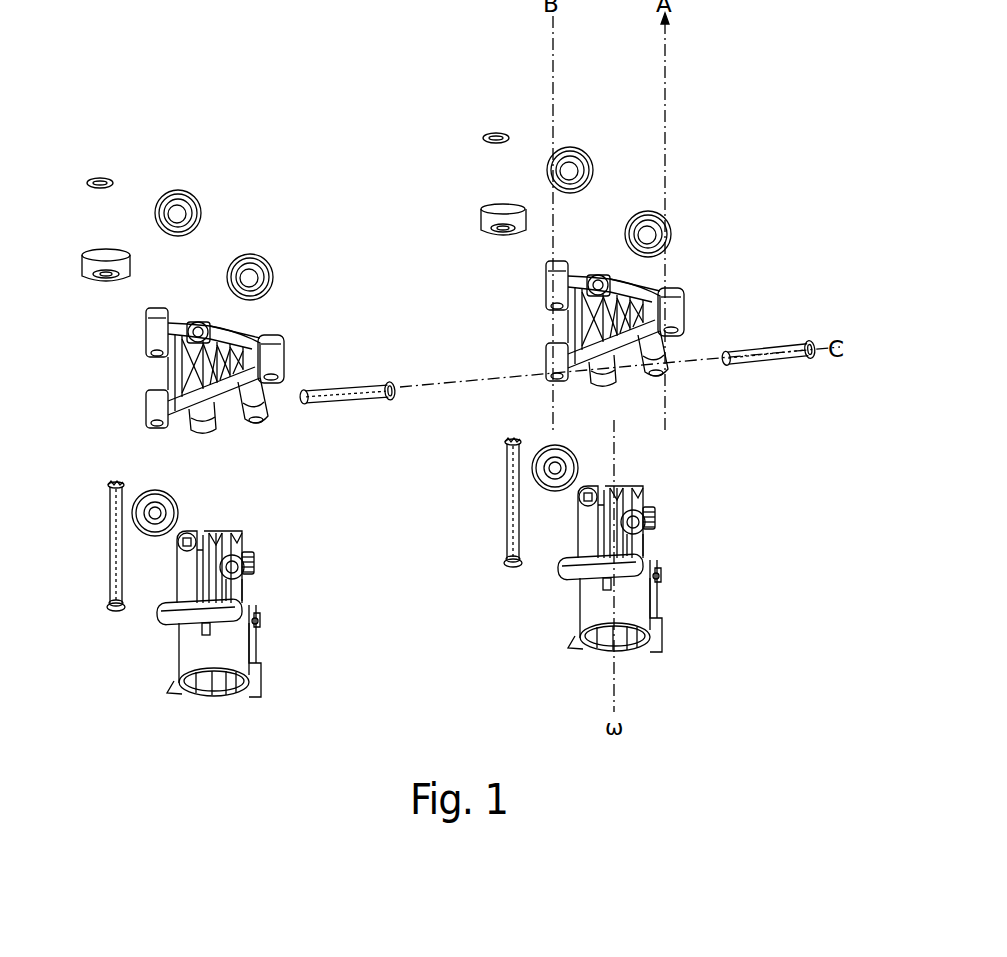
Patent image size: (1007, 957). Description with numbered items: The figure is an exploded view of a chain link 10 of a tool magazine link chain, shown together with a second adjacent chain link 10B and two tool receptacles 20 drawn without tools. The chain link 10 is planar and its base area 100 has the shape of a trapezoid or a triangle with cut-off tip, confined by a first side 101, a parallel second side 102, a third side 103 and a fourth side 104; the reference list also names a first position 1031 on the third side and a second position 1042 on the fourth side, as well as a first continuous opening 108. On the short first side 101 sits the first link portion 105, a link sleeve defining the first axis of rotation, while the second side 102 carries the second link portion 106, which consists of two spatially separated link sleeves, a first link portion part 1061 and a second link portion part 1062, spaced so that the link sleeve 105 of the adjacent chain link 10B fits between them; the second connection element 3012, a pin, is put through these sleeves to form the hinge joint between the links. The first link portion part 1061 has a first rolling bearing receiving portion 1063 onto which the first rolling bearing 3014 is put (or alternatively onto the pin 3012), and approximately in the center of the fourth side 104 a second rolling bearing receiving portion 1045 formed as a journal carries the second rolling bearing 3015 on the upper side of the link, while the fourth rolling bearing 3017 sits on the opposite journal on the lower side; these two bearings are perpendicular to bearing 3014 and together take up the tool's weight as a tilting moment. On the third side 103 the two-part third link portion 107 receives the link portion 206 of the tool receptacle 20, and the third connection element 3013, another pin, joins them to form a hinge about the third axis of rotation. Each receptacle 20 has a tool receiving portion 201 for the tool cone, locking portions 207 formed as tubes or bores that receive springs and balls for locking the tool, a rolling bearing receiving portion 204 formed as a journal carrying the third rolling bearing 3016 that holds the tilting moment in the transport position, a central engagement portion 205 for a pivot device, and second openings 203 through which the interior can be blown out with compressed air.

The chain link 10 is at (584, 255).
The second adjacent chain link 10B is at (141, 333).
The tool receptacle 20 is at (636, 661).
The base area 100 is at (660, 298).
The first side 101 is at (670, 297).
The second side 102 is at (553, 330).
The third side 103 is at (605, 366).
The fourth side 104 is at (630, 273).
The first link portion 105 is at (684, 316).
The second link portion 106 is at (546, 364).
The third link portion 107 is at (660, 360).
The first continuous opening 108 is at (226, 402).
The first position on the third side 1031 is at (210, 414).
The second position on the fourth side 1042 is at (200, 322).
The second rolling bearing receiving portion 1045 is at (610, 282).
The first link portion part 1061 is at (550, 292).
The second link portion part 1062 is at (552, 378).
The first rolling bearing receiving portion 1063 is at (546, 262).
The tool receiving portion of the tool receptacle 201 is at (640, 598).
The second opening of the tool receptacle 203 is at (665, 574).
The rolling bearing receiving portion of the tool receptacle 204 is at (580, 502).
The engagement portion 205 is at (570, 578).
The link portion of the tool receptacle 206 is at (645, 494).
The locking portion 207 is at (652, 512).
The second connection element 3012 is at (505, 490).
The third connection element 3013 is at (765, 364).
The first rolling bearing 3014 is at (481, 207).
The second rolling bearing 3015 is at (571, 147).
The third rolling bearing 3016 is at (582, 456).
The fourth rolling bearing 3017 is at (650, 211).